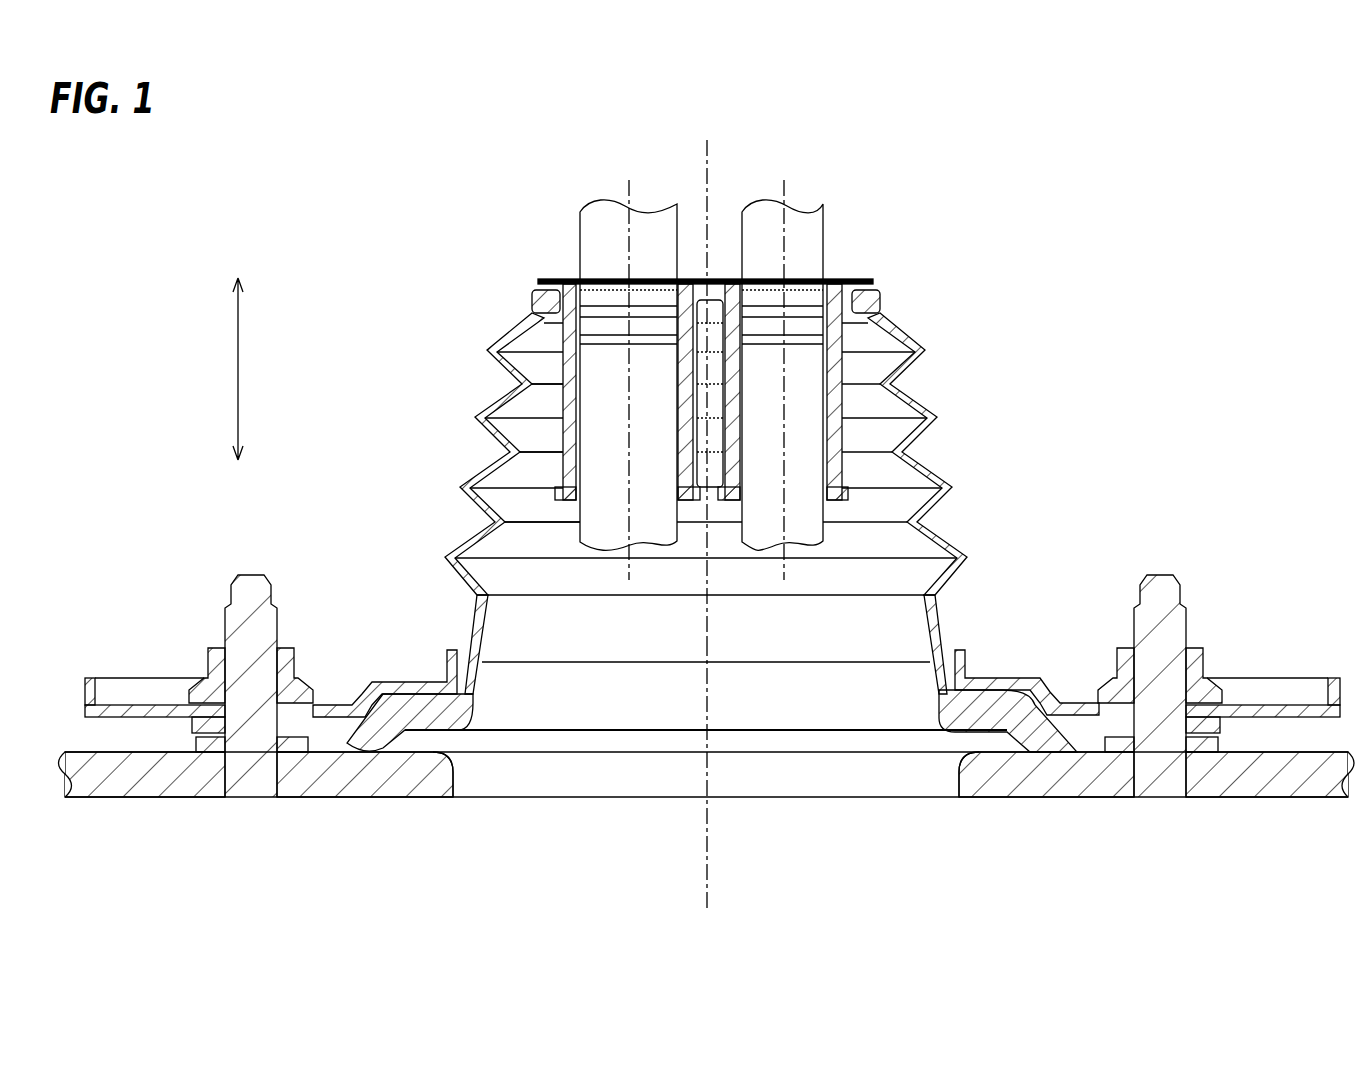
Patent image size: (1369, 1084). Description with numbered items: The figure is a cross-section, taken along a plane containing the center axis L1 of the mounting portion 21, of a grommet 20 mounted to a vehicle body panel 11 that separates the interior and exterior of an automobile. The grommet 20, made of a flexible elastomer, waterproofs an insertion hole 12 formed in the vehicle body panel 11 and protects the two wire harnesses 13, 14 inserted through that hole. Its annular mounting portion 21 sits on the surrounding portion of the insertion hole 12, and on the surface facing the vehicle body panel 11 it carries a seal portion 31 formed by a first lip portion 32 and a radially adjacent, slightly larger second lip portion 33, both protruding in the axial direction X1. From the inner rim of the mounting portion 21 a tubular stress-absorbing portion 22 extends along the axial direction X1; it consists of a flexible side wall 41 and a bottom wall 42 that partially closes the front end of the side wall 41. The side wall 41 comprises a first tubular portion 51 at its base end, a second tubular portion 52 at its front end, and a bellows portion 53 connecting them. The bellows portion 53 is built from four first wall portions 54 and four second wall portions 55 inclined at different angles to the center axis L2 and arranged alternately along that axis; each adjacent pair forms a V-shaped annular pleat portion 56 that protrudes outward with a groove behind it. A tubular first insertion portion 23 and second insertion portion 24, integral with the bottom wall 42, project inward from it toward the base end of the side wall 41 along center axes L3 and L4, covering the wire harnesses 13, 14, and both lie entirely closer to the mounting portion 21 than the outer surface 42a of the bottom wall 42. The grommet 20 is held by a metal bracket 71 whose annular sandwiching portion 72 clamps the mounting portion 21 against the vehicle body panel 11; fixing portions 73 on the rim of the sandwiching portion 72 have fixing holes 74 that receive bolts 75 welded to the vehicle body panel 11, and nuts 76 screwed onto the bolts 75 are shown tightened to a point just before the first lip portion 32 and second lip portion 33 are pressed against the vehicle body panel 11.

The vehicle body panel 11 is at (1322, 786).
The insertion hole 12 is at (952, 786).
The wire harness 13 is at (580, 236).
The wire harness 14 is at (824, 236).
The grommet 20 is at (918, 320).
The mounting portion 21 is at (1018, 705).
The stress-absorbing portion 22 is at (945, 635).
The first insertion portion 23 is at (556, 488).
The second insertion portion 24 is at (848, 488).
The seal portion 31 is at (402, 842).
The first lip portion 32 is at (380, 755).
The second lip portion 33 is at (350, 755).
The side wall 41 is at (943, 460).
The bottom wall 42 is at (712, 297).
The outer surface 42a is at (850, 281).
The first tubular portion 51 is at (470, 632).
The second tubular portion 52 is at (532, 305).
The bellows portion 53 is at (492, 426).
The first wall portion 54 is at (510, 378).
The second wall portion 55 is at (492, 340).
The pleat portion 56 is at (925, 352).
The bracket 71 is at (1305, 678).
The sandwiching portion 72 is at (403, 688).
The fixing portion 73 is at (130, 717).
The fixing hole 74 is at (232, 713).
The bolt 75 is at (237, 598).
The nut 76 is at (208, 662).
The center axis L1 is at (708, 873).
The center axis L2 is at (708, 153).
The center axis L3 is at (629, 190).
The center axis L4 is at (784, 190).
The axial direction X1 is at (238, 368).